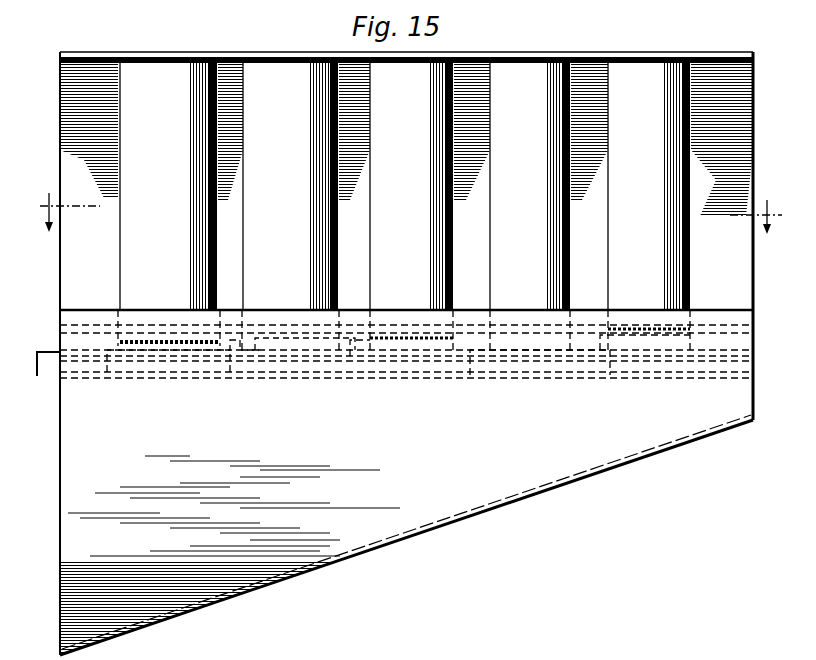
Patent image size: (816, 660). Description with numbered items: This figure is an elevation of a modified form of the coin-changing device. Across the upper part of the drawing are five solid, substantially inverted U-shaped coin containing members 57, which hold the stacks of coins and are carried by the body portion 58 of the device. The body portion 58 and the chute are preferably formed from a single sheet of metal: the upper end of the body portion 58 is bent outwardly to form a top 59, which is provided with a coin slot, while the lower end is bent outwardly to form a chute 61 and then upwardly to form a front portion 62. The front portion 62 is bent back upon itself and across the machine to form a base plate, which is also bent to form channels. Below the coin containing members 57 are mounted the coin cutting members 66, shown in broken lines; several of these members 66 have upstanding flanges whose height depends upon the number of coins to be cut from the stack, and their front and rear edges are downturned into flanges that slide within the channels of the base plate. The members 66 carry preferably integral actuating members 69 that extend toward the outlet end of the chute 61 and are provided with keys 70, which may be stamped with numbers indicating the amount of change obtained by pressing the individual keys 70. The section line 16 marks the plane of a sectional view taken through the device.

The section line 16- 16 is at (409, 206).
The coin containing member 57 is at (417, 186).
The body portion 58 is at (119, 269).
The top 59 is at (262, 58).
The chute 61 is at (272, 585).
The front portion 62 is at (230, 530).
The coin cutting member 66 is at (600, 352).
The actuating member 69 is at (278, 326).
The key 70 is at (37, 378).